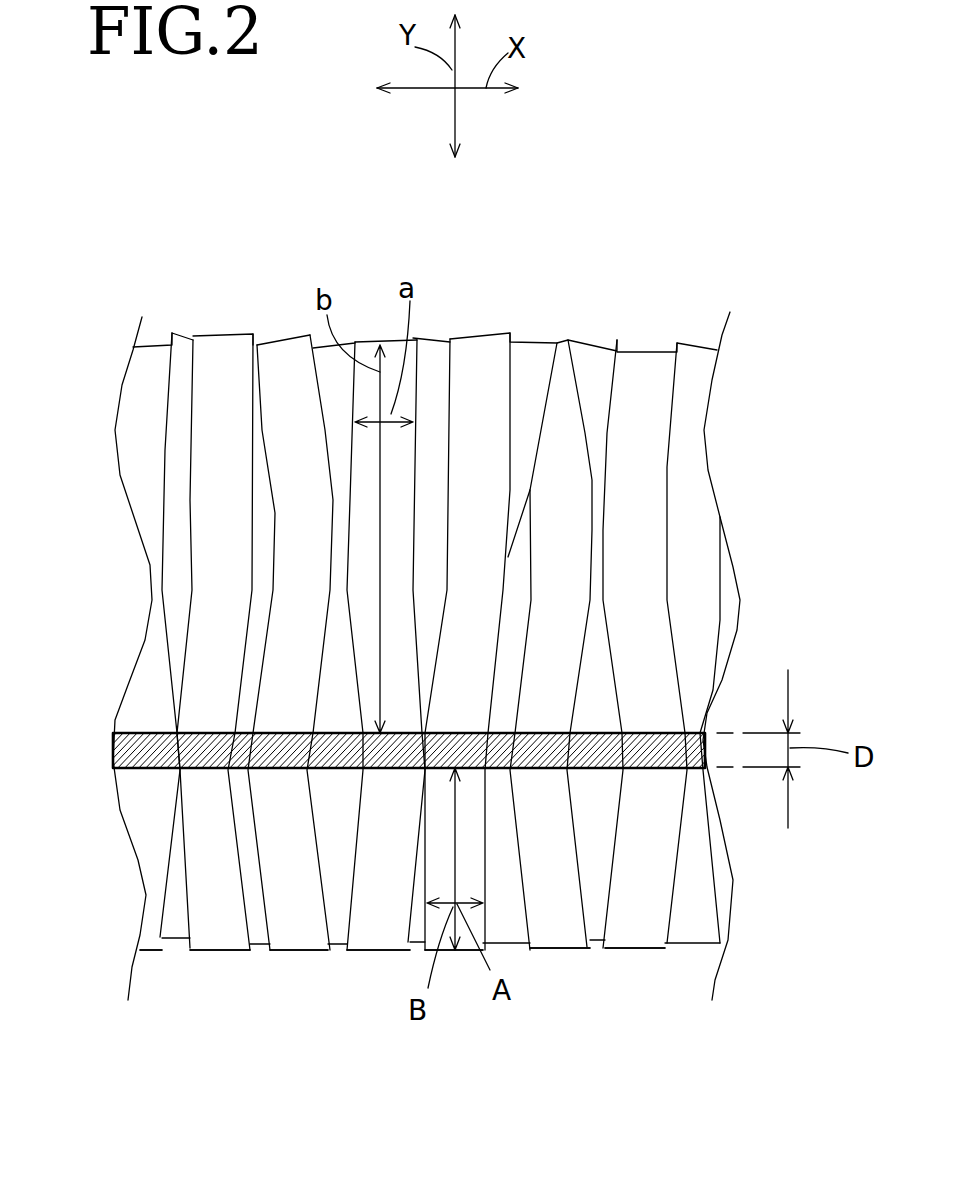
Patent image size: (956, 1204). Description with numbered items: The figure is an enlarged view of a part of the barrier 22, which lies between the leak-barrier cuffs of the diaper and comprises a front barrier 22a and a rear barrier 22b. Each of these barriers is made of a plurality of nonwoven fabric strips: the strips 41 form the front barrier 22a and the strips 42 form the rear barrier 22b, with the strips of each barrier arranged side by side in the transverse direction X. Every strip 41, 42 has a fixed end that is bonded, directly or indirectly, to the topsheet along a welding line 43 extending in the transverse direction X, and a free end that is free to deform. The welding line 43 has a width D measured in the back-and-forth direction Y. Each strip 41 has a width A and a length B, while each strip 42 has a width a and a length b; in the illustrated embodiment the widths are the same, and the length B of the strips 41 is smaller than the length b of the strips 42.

The barrier 22 is at (216, 238).
The front barrier 22a is at (585, 1008).
The rear barrier 22b is at (634, 259).
The strips 41 is at (228, 928).
The strips 42 is at (529, 353).
The welding line 43 is at (444, 694).